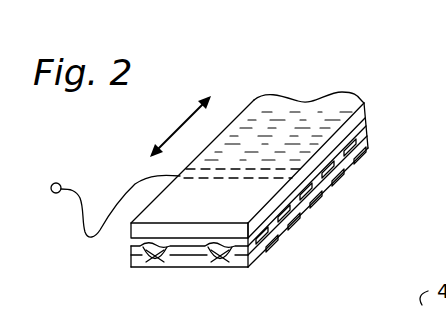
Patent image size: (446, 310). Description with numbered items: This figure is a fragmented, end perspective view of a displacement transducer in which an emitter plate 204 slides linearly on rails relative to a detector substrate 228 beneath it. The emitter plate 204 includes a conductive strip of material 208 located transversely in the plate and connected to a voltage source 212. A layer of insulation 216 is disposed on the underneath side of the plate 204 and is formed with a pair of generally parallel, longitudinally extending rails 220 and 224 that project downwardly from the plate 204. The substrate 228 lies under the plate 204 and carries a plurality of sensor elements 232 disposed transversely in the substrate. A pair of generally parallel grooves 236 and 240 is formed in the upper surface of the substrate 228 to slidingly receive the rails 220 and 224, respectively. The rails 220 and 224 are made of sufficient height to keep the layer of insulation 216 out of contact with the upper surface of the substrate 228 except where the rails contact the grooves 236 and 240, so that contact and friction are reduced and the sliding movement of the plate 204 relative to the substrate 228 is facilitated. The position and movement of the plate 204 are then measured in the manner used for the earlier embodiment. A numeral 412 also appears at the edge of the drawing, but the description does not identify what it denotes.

The emitter plate 204 is at (364, 103).
The conductive strip of material 208 is at (347, 167).
The voltage source 212 is at (58, 183).
The layer of insulation 216 is at (131, 246).
The rail 220 is at (157, 266).
The rail 224 is at (238, 266).
The substrate 228 is at (302, 214).
The sensor elements 232 is at (258, 256).
The groove 236 is at (133, 267).
The groove 240 is at (220, 266).
The element 412 is at (377, 298).